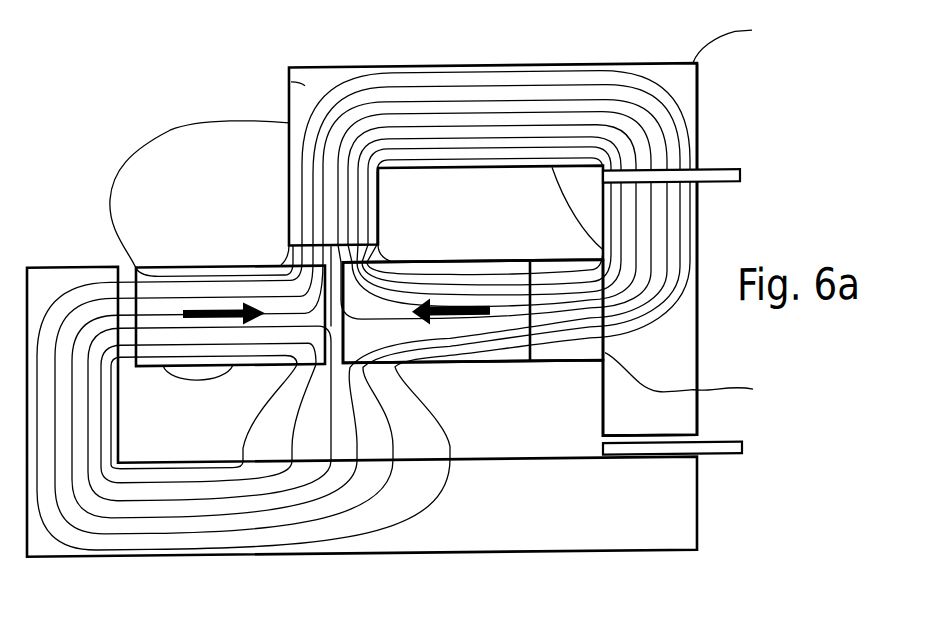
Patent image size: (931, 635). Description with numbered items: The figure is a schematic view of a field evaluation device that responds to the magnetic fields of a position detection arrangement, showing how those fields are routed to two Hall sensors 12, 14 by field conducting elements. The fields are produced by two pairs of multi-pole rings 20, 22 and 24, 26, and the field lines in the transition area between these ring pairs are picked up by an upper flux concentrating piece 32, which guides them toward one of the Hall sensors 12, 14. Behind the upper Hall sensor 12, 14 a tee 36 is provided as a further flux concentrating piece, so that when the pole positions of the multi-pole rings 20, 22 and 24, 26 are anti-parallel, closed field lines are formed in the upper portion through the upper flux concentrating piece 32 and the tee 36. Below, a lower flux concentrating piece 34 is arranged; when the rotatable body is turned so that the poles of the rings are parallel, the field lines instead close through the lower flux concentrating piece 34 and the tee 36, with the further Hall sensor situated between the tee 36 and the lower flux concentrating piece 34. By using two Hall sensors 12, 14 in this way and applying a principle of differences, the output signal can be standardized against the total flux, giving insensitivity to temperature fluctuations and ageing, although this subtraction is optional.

The Hall sensor 12 is at (719, 310).
The Hall sensor 14 is at (735, 181).
The multi-pole ring 20 is at (473, 349).
The multi-pole ring 22 is at (460, 368).
The multi-pole ring 24 is at (230, 353).
The multi-pole ring 26 is at (205, 368).
The upper flux concentrating piece 32 is at (508, 70).
The lower flux concentrating piece 34 is at (675, 538).
The tee 36 is at (677, 356).